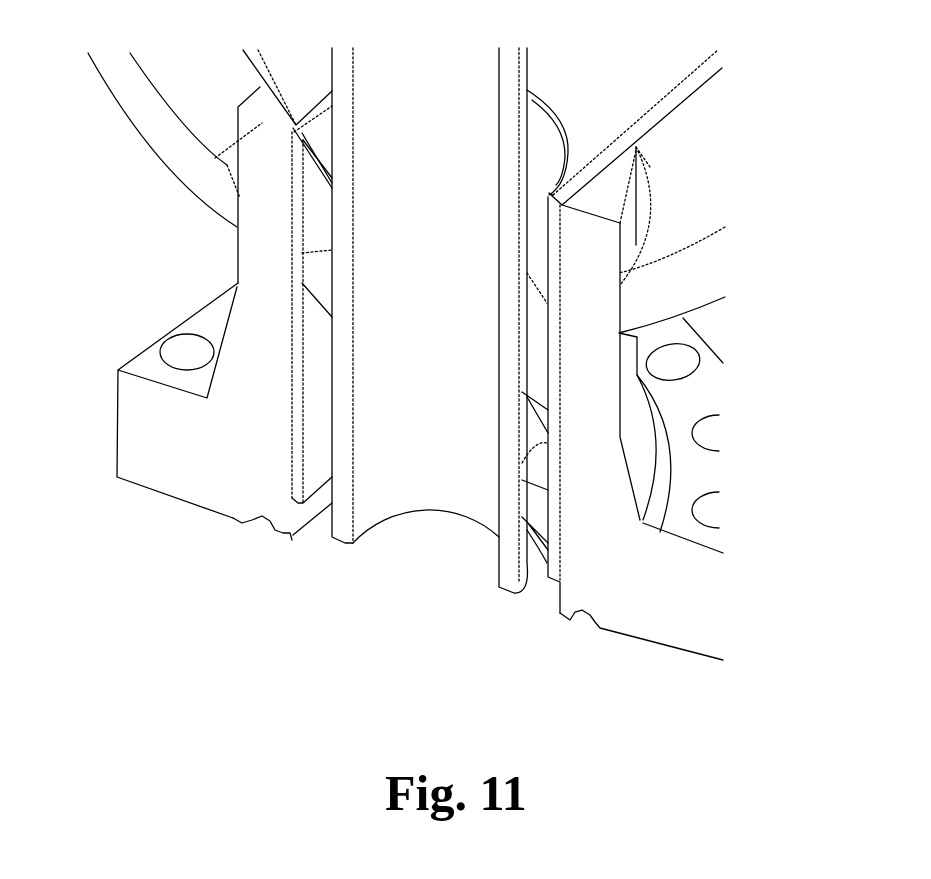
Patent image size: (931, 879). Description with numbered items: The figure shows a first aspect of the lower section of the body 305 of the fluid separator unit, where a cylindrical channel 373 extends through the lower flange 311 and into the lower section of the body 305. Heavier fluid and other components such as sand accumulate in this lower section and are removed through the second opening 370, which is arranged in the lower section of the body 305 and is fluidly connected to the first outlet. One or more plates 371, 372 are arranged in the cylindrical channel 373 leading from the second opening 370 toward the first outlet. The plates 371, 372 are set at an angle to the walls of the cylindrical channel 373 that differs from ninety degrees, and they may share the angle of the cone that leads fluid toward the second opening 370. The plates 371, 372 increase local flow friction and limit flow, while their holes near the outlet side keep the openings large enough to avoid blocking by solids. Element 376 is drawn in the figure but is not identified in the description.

The body 305 is at (140, 107).
The second opening 370 is at (543, 160).
The plate 371 is at (325, 145).
The plate 372 is at (323, 273).
The cylindrical channel 373 is at (323, 438).
The side block 376 is at (553, 587).
The lower flange 311 is at (702, 595).